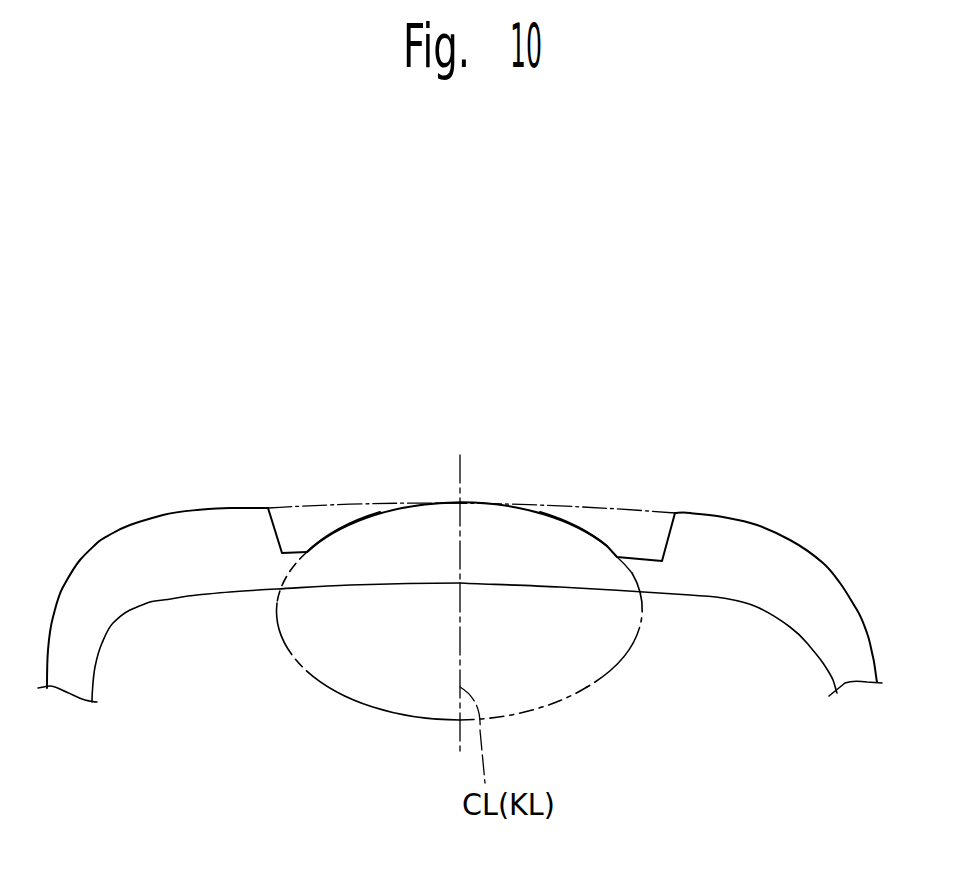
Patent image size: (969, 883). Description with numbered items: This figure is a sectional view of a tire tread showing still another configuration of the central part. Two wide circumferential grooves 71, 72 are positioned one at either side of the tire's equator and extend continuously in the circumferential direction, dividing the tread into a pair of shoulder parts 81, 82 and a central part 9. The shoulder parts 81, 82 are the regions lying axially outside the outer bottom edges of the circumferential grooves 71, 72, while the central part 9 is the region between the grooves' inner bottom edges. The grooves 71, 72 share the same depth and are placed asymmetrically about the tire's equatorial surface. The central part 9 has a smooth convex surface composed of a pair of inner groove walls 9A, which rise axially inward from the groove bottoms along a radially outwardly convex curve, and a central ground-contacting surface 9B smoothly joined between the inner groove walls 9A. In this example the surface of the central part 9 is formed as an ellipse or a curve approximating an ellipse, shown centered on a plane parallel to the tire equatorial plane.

The shoulder part 81 is at (180, 508).
The shoulder part 82 is at (712, 508).
The circumferential groove 71 is at (275, 498).
The circumferential groove 72 is at (628, 528).
The central part 9 is at (472, 497).
The inner groove wall 9A is at (335, 527).
The central ground-contacting surface 9B is at (403, 507).